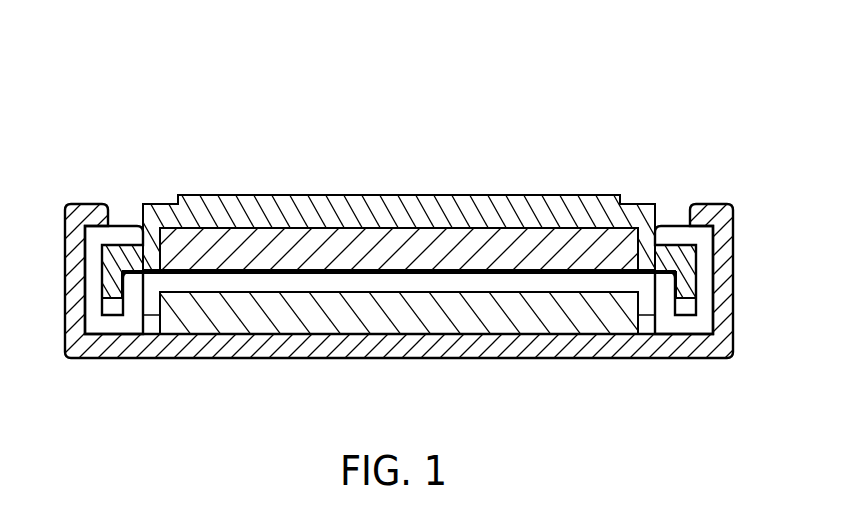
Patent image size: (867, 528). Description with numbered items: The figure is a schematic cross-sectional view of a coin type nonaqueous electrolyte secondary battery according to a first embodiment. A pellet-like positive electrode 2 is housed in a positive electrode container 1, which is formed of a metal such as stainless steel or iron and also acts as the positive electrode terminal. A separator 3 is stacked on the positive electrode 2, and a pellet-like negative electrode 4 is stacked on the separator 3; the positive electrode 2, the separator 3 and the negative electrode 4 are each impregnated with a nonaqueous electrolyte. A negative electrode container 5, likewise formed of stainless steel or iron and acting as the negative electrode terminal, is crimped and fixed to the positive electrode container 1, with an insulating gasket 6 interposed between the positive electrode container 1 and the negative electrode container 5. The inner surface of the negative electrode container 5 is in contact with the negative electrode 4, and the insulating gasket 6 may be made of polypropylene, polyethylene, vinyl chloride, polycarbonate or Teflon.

The positive electrode container 1 is at (731, 239).
The positive electrode 2 is at (247, 313).
The separator 3 is at (395, 287).
The negative electrode 4 is at (273, 237).
The negative electrode container 5 is at (408, 212).
The insulating gasket 6 is at (673, 233).